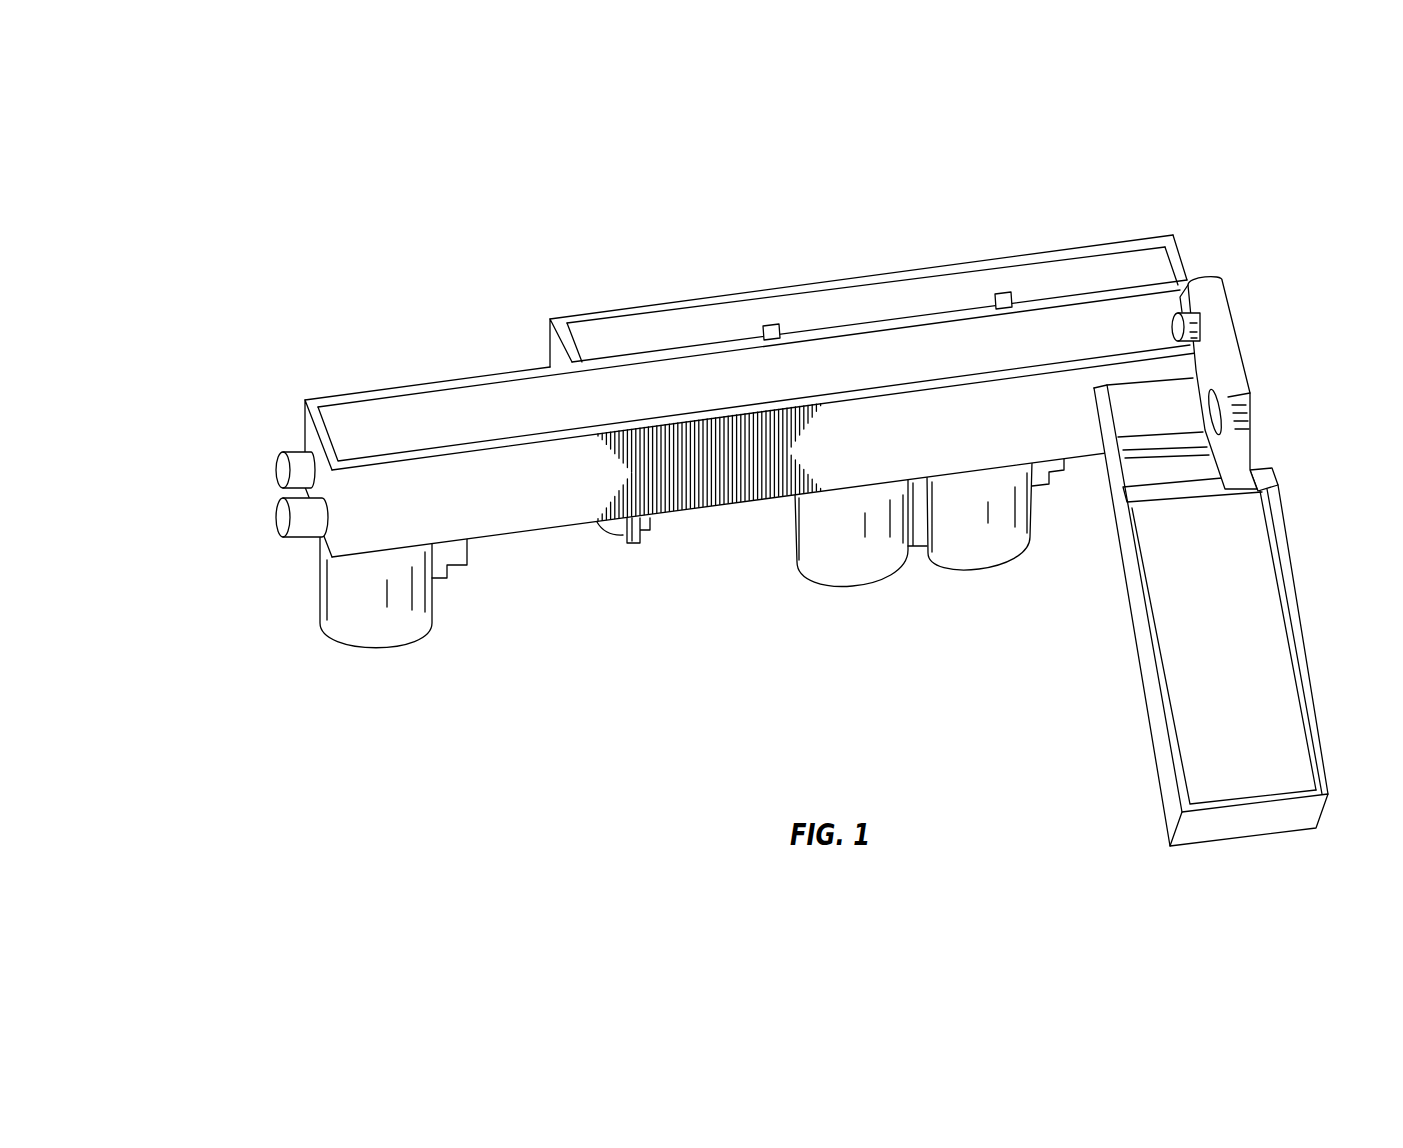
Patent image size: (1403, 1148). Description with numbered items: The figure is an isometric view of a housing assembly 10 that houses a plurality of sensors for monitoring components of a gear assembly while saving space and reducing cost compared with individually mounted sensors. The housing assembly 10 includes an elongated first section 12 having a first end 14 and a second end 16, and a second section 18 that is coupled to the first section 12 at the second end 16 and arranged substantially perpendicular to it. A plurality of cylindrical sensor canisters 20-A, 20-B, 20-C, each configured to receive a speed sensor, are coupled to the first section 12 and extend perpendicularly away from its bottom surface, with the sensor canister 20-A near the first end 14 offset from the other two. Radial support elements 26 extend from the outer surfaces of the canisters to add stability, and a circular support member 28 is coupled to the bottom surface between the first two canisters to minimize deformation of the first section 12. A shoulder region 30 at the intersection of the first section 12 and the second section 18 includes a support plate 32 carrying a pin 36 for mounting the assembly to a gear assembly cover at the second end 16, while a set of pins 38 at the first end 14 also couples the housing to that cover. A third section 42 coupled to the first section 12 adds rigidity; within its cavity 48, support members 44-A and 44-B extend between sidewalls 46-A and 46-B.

The housing assembly 10 is at (776, 490).
The first section 12 is at (727, 411).
The first end 14 is at (306, 388).
The second end 16 is at (1180, 218).
The second section 18 is at (1309, 546).
The sensor canister 20-A is at (390, 638).
The sensor canister 20-B is at (852, 571).
The sensor canister 20-C is at (975, 557).
The radial support elements 26 is at (447, 578).
The circular support member 28 is at (638, 543).
The shoulder region 30 is at (1264, 383).
The support plate 32 is at (1243, 452).
The pin 36 is at (1200, 322).
The set of pins 38 is at (263, 498).
The third section 42 is at (868, 258).
The support member 44-A is at (770, 325).
The support member 44-B is at (1003, 295).
The sidewall 46-A is at (607, 310).
The sidewall 46-B is at (915, 322).
The cavity 48 is at (1044, 279).